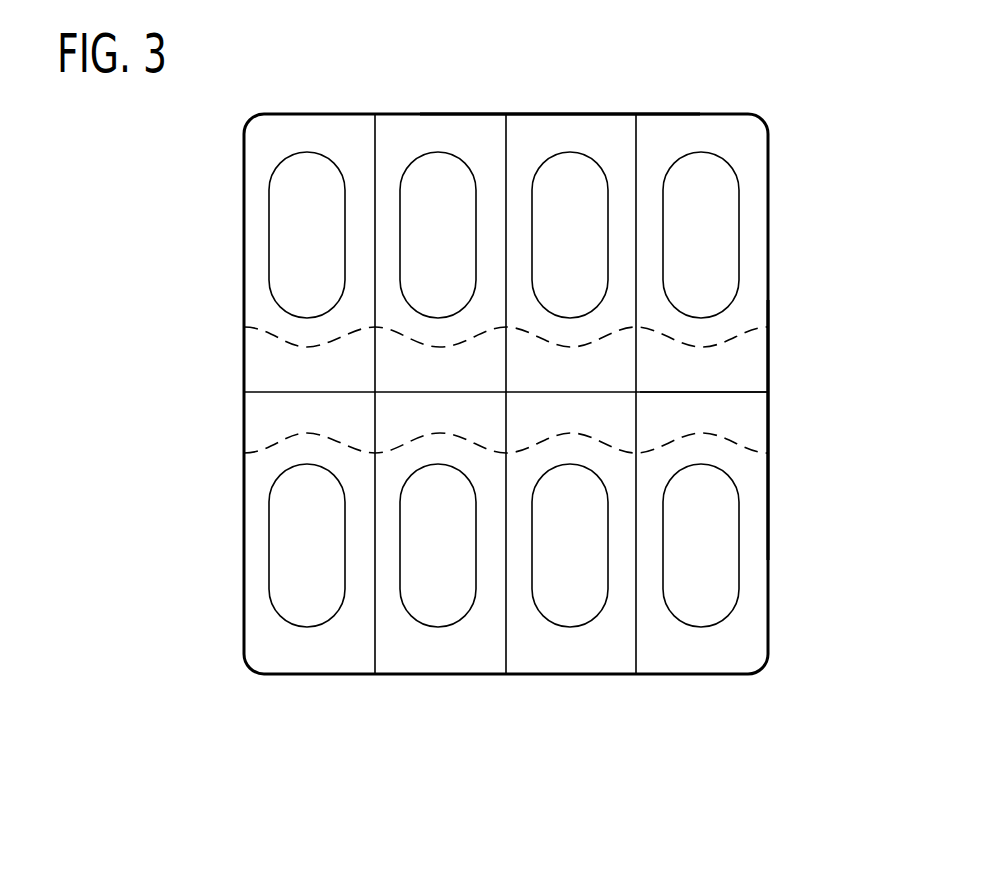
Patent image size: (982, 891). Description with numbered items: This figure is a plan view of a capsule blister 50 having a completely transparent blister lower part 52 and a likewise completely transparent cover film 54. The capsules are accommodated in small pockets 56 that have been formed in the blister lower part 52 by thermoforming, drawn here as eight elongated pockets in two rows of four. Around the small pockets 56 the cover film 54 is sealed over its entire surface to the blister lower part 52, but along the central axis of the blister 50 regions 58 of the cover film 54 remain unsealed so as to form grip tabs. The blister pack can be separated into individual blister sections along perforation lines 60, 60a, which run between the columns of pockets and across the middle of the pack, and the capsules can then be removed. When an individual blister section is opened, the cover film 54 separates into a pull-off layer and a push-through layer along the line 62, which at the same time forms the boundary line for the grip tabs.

The capsule blister 50 is at (775, 122).
The blister lower part 52 is at (782, 588).
The cover film 54 is at (681, 124).
The small pockets 56 is at (740, 209).
The regions of the cover film 58 is at (748, 422).
The perforation line 60 is at (635, 652).
The perforation line 60a is at (256, 393).
The line 62 is at (265, 332).